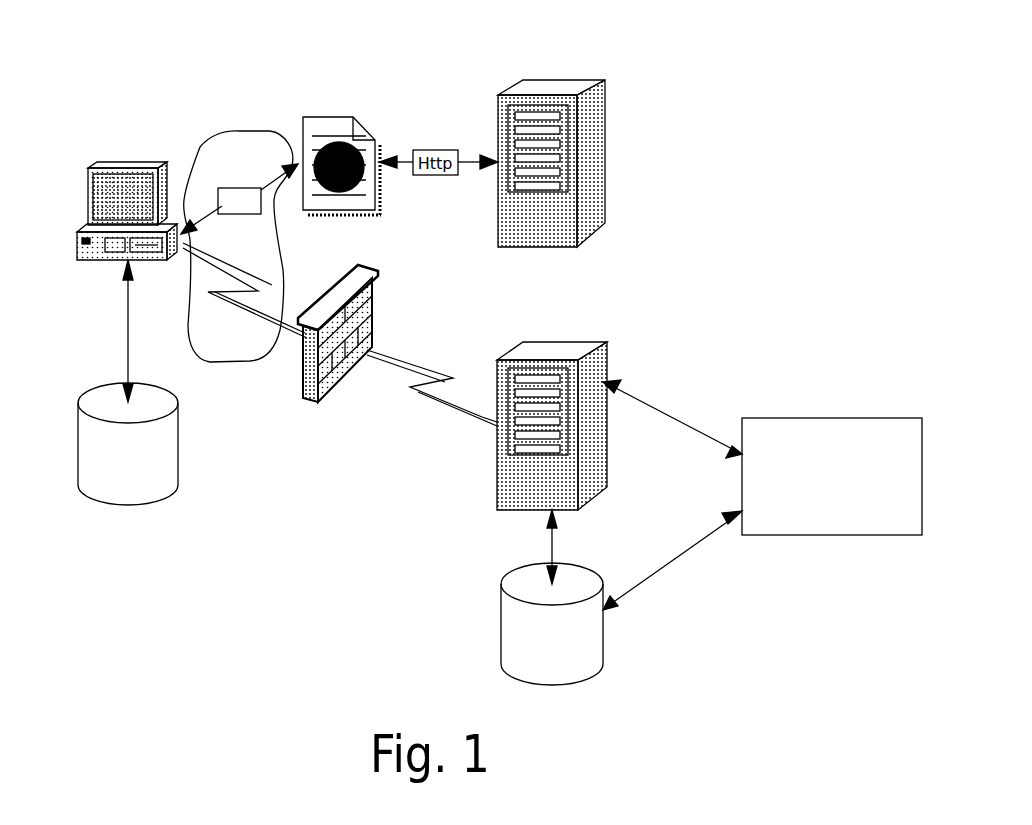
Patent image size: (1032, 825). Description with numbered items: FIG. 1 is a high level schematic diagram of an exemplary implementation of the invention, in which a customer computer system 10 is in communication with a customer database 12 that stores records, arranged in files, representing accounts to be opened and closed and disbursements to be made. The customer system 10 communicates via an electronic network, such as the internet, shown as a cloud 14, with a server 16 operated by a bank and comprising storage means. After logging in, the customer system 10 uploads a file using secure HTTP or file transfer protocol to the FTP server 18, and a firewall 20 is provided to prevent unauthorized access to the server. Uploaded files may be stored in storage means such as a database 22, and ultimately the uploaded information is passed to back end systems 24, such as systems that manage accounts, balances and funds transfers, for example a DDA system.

The customer computer system 10 is at (110, 176).
The customer database 12 is at (175, 455).
The internet / network cloud 14 is at (238, 136).
The server 16 is at (600, 172).
The FTP server 18 is at (605, 432).
The firewall 20 is at (328, 392).
The database 22 is at (603, 624).
The back end systems 24 is at (770, 535).